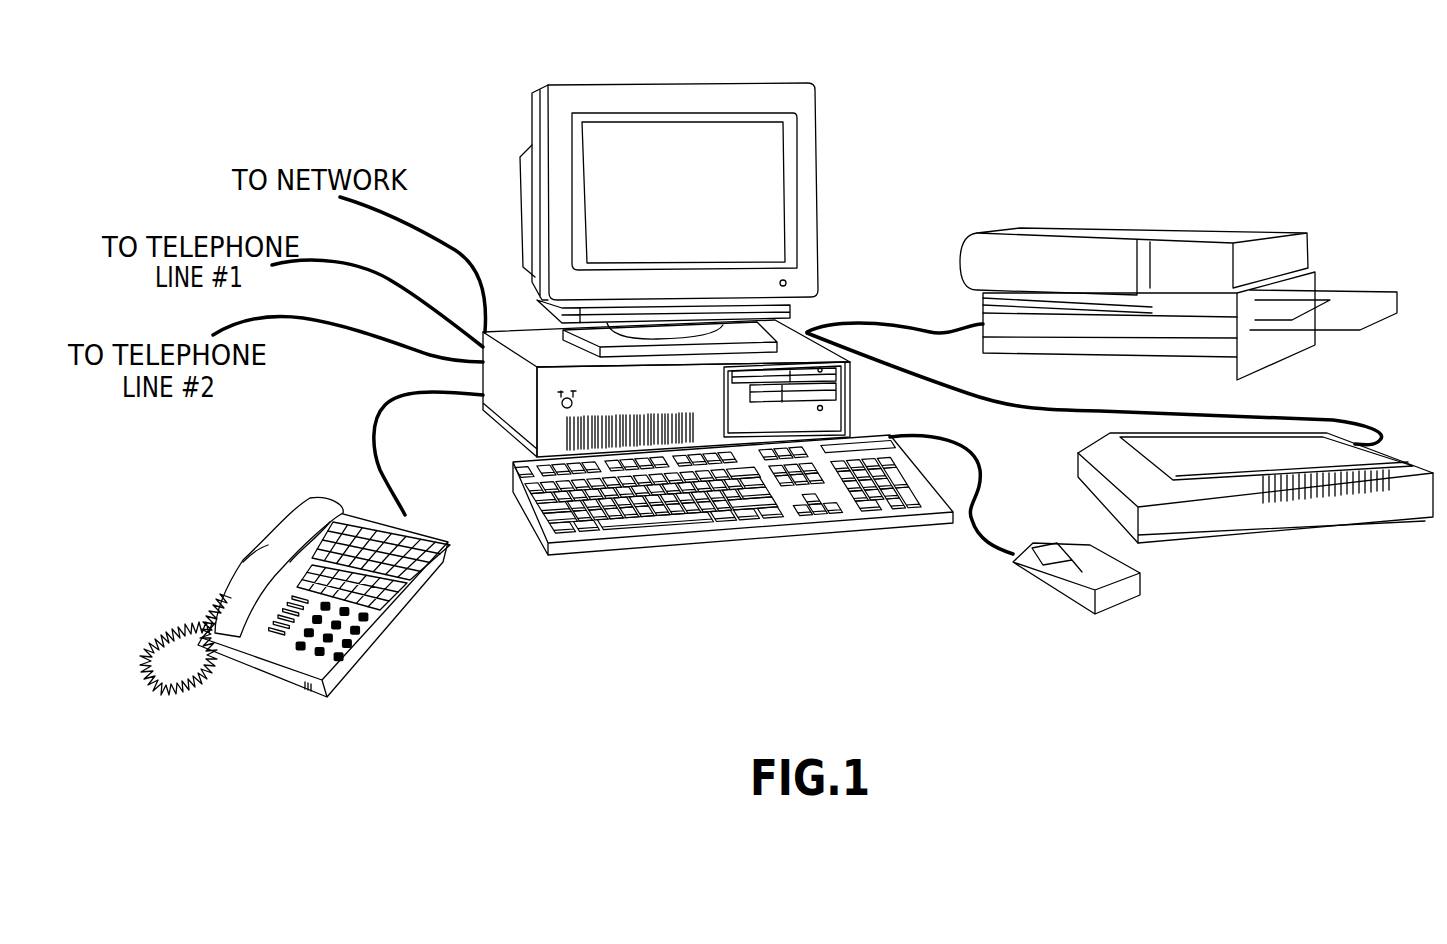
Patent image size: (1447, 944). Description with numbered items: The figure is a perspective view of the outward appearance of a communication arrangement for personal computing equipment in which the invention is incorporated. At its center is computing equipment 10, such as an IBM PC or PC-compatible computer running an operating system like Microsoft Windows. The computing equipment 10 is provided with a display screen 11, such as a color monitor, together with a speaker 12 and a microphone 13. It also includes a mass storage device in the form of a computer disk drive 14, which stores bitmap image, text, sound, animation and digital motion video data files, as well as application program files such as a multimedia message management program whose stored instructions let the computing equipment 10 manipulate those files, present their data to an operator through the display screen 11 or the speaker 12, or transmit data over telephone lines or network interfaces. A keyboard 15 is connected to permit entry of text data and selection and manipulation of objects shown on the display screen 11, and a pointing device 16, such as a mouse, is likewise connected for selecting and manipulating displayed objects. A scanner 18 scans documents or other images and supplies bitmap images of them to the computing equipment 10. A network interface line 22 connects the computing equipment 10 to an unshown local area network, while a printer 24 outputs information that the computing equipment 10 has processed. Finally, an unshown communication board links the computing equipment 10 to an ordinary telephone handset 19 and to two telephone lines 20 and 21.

The computing equipment 10 is at (910, 165).
The display screen 11 is at (708, 83).
The speaker 12 is at (627, 417).
The microphone 13 is at (560, 406).
The computer disk drive 14 is at (822, 408).
The keyboard 15 is at (613, 527).
The pointing device 16 is at (1110, 606).
The scanner 18 is at (1290, 537).
The telephone handset 19 is at (350, 680).
The telephone line 20 is at (318, 265).
The telephone line 21 is at (300, 323).
The network interface line 22 is at (450, 247).
The printer 24 is at (1097, 228).